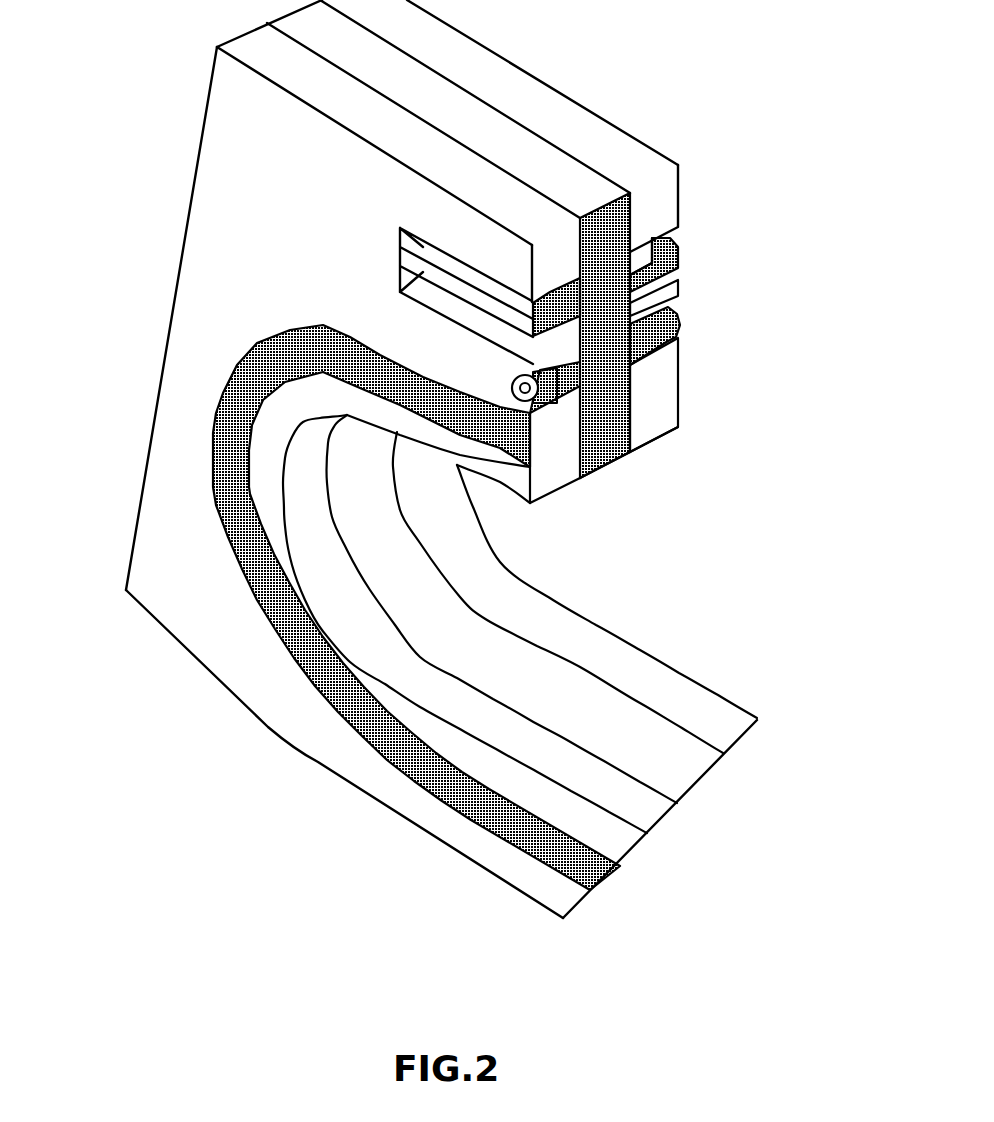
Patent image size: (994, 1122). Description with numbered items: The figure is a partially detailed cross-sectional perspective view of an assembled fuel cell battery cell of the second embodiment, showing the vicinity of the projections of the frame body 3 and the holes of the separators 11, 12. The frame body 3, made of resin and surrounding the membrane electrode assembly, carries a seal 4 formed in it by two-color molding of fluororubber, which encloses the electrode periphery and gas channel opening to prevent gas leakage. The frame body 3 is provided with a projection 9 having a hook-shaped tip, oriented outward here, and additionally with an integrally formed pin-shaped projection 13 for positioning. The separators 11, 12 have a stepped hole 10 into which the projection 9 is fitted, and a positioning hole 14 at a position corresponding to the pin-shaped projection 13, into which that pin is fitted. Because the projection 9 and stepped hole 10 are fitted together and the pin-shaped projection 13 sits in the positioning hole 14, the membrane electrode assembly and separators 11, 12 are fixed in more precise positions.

The frame body 3 is at (612, 462).
The seal 4 is at (212, 420).
The projection 9 is at (686, 246).
The stepped hole 10 is at (682, 232).
The separator 11 is at (668, 420).
The separator 12 is at (556, 483).
The pin-shaped projection 13 is at (676, 321).
The positioning hole 14 is at (513, 385).